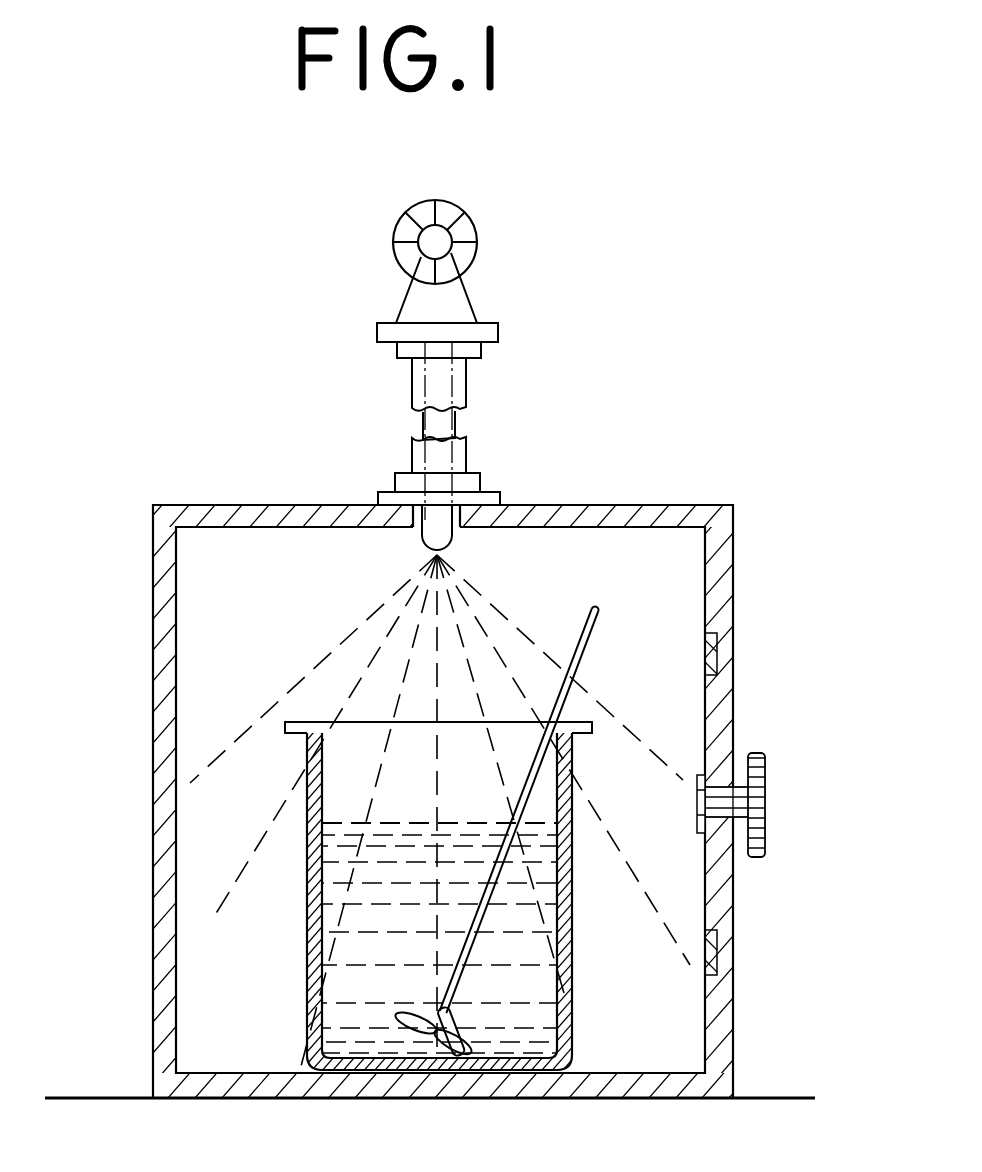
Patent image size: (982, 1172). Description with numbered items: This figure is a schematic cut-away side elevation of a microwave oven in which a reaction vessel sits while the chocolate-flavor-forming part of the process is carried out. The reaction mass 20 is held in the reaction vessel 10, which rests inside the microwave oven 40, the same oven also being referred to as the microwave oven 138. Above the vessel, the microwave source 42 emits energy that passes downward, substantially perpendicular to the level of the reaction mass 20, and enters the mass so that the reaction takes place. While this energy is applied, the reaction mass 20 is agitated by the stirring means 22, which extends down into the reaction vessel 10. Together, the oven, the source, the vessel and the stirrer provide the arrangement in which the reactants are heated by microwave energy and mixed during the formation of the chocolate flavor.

The reaction vessel 10 is at (310, 772).
The reaction mass 20 is at (357, 932).
The stirring means 22 is at (587, 638).
The microwave oven 40 is at (162, 643).
The microwave source 42 is at (380, 476).
The microwave oven 138 is at (745, 1080).